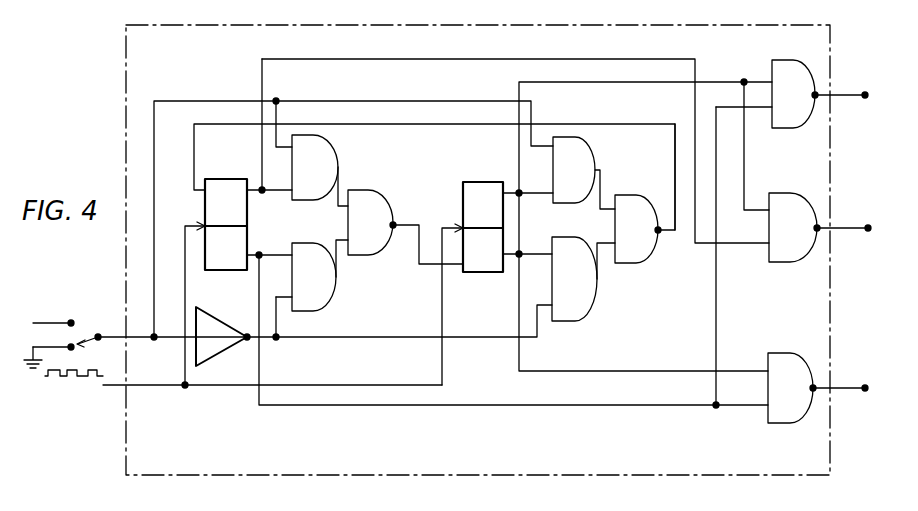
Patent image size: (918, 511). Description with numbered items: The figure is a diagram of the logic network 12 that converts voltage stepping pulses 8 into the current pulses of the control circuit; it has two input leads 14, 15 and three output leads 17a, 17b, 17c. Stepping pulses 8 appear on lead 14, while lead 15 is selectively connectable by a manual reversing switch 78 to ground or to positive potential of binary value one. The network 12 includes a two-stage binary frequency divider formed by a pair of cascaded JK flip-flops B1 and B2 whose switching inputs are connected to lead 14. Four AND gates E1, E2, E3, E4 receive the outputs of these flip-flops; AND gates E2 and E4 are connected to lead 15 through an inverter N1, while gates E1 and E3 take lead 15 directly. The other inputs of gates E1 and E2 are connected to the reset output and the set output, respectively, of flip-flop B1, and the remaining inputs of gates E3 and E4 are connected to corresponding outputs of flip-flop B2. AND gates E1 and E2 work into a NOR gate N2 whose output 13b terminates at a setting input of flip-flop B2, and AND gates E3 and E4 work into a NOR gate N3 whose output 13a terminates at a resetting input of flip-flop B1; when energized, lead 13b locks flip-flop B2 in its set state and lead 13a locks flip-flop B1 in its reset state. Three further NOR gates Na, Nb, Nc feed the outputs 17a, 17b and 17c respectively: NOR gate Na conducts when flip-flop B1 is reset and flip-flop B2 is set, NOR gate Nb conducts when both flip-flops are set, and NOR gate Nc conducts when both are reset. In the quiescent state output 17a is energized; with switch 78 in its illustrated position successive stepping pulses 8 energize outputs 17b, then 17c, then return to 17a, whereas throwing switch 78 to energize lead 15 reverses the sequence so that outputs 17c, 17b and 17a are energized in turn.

The logic network 12 is at (123, 173).
The input lead 15 is at (98, 333).
The manual switch 78 is at (87, 344).
The stepping pulses 8 is at (80, 377).
The input lead 14 is at (112, 386).
The flip-flop B1 is at (222, 178).
The flip-flop B2 is at (482, 180).
The AND gate E1 is at (330, 162).
The AND gate E2 is at (318, 302).
The AND gate E3 is at (590, 145).
The AND gate E4 is at (584, 300).
The inverter N1 is at (217, 356).
The NOR gate N2 is at (378, 200).
The NOR gate N3 is at (640, 203).
The output lead 13a is at (673, 128).
The output lead 13b is at (405, 225).
The NOR gate Na is at (792, 64).
The NOR gate Nb is at (803, 200).
The NOR gate Nc is at (801, 356).
The output lead 17a is at (850, 93).
The output lead 17b is at (850, 232).
The output lead 17c is at (848, 386).